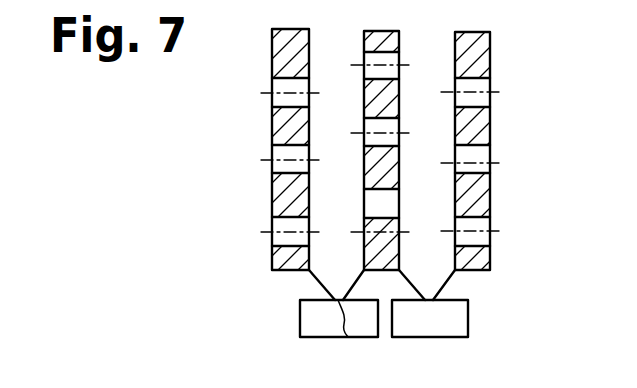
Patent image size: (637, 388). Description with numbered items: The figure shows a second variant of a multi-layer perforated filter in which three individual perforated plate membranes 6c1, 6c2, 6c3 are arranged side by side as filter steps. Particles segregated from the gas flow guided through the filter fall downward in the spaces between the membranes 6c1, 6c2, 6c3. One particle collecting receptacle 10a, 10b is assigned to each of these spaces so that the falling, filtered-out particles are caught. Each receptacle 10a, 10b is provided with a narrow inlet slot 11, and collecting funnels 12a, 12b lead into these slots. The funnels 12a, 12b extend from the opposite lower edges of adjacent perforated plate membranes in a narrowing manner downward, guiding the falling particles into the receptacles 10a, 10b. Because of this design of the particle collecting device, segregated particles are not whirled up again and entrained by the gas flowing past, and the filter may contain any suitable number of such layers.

The perforated plate membrane 6c1 is at (282, 43).
The perforated plate membrane 6c2 is at (366, 43).
The perforated plate membrane 6c3 is at (463, 43).
The collecting funnel 12a is at (318, 283).
The collecting funnel 12b is at (448, 282).
The particle collecting receptacle 10a is at (300, 325).
The particle collecting receptacle 10b is at (468, 322).
The inlet slot 11 is at (348, 337).